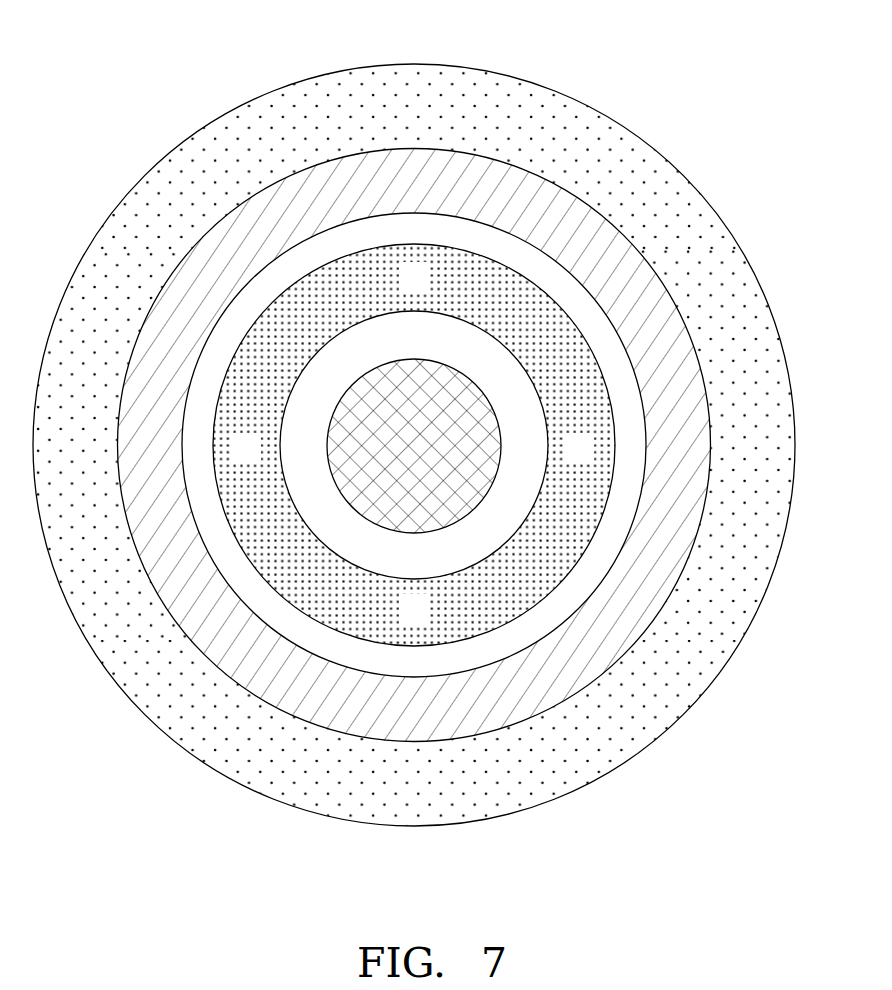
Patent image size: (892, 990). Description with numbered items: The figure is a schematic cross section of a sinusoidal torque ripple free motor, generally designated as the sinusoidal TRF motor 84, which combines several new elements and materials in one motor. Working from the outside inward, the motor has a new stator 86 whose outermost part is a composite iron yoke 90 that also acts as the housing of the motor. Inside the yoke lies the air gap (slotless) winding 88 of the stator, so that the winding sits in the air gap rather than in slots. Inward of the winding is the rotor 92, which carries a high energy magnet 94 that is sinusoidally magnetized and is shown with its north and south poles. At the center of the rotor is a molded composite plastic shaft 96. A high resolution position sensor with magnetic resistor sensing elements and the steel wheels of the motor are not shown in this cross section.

The sinusoidal TRF motor 84 is at (163, 66).
The stator 86 is at (588, 99).
The air gap (slotless) winding 88 is at (615, 245).
The composite iron yoke 90 is at (147, 667).
The rotor 92 is at (274, 292).
The high energy magnet 94 is at (582, 355).
The molded composite plastic shaft 96 is at (337, 435).